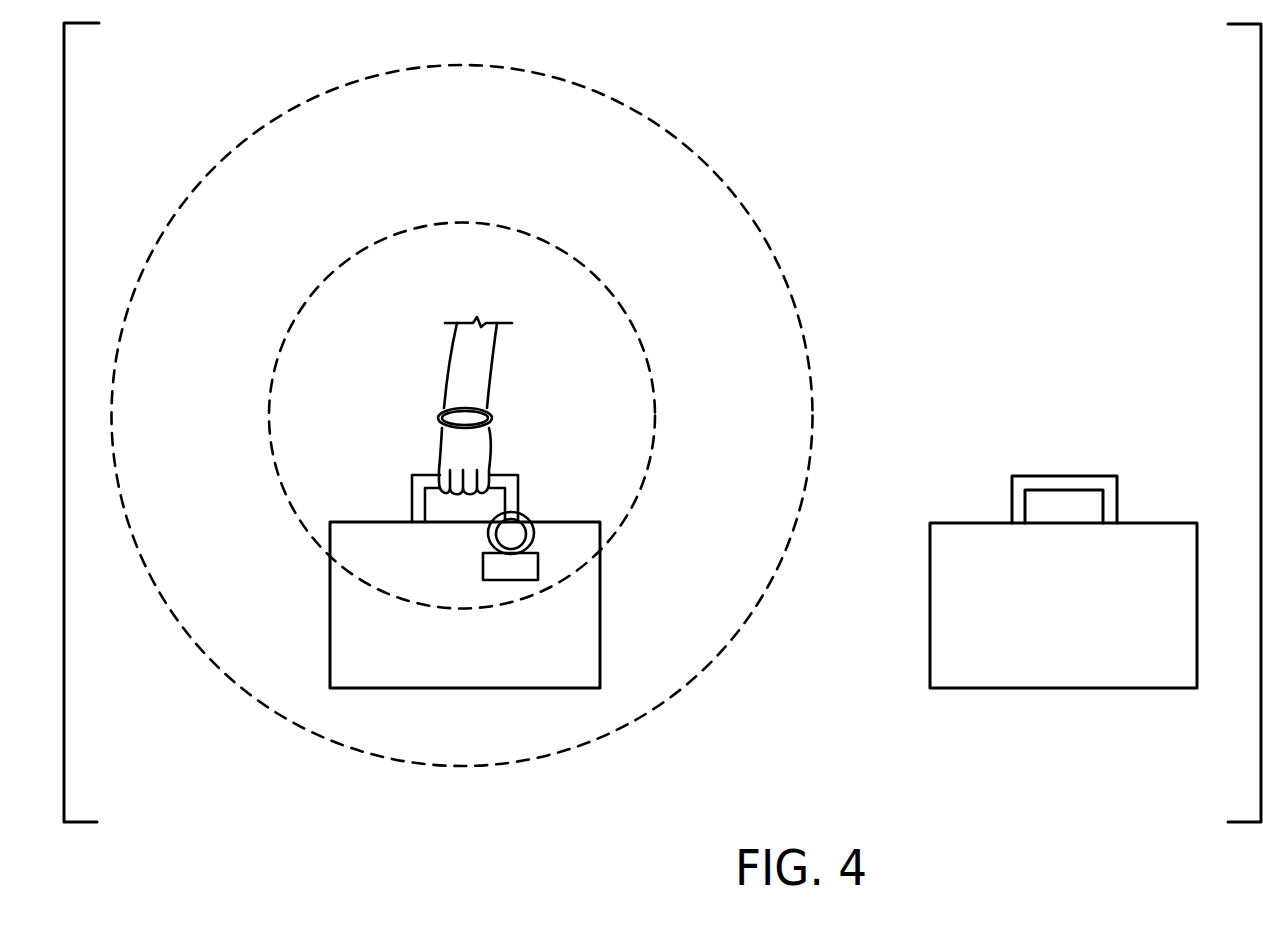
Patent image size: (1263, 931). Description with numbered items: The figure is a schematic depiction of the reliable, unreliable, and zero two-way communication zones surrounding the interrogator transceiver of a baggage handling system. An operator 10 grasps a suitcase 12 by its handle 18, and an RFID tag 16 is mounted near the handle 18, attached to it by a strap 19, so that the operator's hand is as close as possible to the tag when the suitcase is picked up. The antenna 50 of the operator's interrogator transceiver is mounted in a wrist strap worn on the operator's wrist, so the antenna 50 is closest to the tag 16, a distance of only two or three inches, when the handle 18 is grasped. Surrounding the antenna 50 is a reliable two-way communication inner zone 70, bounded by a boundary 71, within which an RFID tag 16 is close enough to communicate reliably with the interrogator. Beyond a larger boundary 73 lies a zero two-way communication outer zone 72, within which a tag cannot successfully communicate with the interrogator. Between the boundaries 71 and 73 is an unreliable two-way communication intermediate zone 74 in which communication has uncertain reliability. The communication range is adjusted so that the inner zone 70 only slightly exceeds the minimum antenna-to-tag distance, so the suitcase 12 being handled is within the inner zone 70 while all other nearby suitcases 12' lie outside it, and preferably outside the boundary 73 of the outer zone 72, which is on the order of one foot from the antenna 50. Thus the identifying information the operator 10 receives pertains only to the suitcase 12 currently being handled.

The operator 10 is at (453, 354).
The antenna 50 is at (437, 419).
The handle 18 is at (418, 502).
The strap 19 is at (535, 533).
The RFID tag 16 is at (498, 568).
The suitcase 12 is at (465, 605).
The other nearby suitcases 12' is at (1063, 582).
The reliable 2-way communication inner zone 70 is at (592, 365).
The boundary of the inner zone 71 is at (556, 248).
The boundary of the outer zone 73 is at (686, 146).
The unreliable 2-way communication intermediate zone 74 is at (710, 281).
The zero 2-way communication outer zone 72 is at (1015, 224).